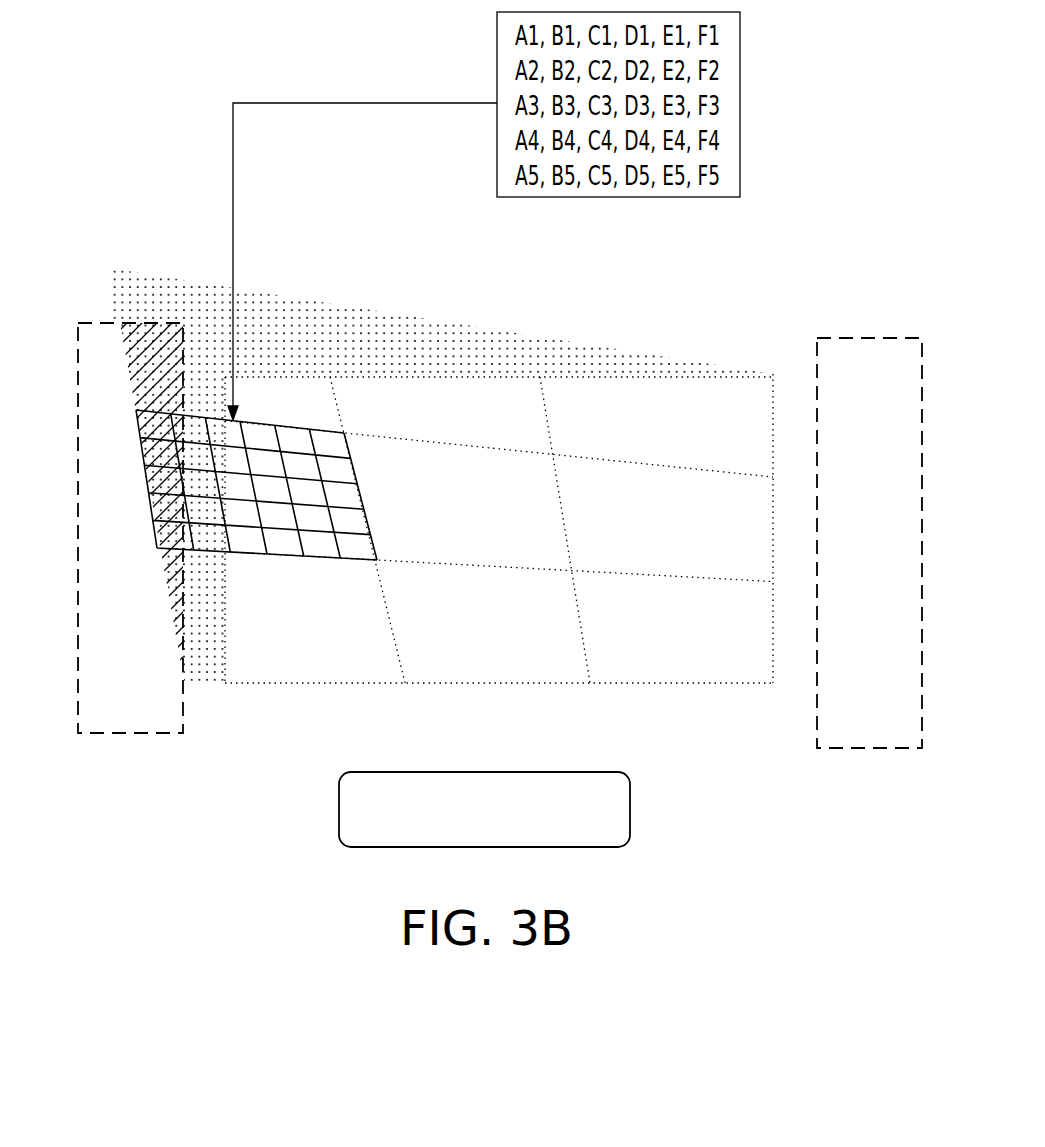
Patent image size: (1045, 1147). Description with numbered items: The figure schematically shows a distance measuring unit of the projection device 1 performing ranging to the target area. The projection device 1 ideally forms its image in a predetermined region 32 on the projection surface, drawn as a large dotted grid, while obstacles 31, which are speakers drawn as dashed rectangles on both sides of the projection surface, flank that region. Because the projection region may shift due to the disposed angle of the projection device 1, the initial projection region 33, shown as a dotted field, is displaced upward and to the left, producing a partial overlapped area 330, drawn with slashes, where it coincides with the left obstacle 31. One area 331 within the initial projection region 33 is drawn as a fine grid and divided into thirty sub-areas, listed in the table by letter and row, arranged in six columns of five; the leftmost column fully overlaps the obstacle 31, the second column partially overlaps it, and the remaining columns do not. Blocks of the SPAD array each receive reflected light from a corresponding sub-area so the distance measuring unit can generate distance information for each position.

The projection device 1 is at (632, 810).
The obstacle 31 is at (128, 735).
The predetermined region 32 is at (613, 374).
The initial projection region 33 is at (440, 320).
The partial overlapped area 330 is at (182, 594).
The area 331 is at (140, 457).